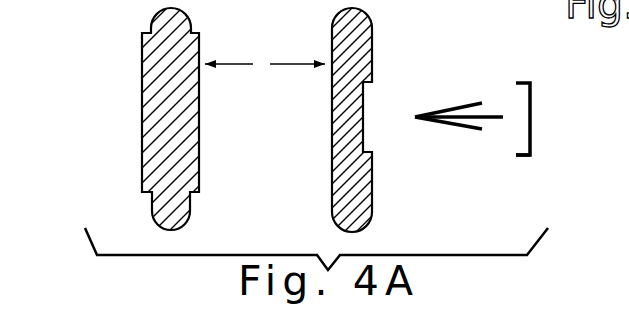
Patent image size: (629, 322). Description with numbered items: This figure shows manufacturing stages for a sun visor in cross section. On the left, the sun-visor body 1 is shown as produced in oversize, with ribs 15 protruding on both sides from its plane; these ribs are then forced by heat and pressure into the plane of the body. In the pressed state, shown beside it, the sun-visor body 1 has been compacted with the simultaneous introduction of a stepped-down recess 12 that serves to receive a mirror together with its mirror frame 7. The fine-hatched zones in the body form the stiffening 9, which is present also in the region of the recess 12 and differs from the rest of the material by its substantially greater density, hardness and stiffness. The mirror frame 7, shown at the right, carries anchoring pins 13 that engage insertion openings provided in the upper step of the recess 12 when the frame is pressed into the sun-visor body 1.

The sun-visor body 1 is at (265, 62).
The mirror frame 7 is at (533, 110).
The stiffening 9 is at (334, 175).
The stepped-down recess 12 is at (364, 88).
The anchoring pins 13 is at (520, 160).
The ribs 15 is at (141, 82).